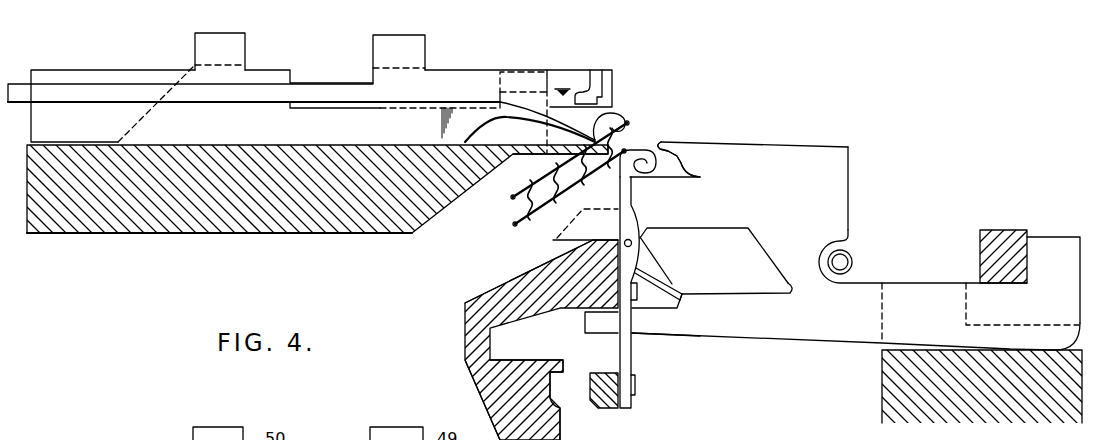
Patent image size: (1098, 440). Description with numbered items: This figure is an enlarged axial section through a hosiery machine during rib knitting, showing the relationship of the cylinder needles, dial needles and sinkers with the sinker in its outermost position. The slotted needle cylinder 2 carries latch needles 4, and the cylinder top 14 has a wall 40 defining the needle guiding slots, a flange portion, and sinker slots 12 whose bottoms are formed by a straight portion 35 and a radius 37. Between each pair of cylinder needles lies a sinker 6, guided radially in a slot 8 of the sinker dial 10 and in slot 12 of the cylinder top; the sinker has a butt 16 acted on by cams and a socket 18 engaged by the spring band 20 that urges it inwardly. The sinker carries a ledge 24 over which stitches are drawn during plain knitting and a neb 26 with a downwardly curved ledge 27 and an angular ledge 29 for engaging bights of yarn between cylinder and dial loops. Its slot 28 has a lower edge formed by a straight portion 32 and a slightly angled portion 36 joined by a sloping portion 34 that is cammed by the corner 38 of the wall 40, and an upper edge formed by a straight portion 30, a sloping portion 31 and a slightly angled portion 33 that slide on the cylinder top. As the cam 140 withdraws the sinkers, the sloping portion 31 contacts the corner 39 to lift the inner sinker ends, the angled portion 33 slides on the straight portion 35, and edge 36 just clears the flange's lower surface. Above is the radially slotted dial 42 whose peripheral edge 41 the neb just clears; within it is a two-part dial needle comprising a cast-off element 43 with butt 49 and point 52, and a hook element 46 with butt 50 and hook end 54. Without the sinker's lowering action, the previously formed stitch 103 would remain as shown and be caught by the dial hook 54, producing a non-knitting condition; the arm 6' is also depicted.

The needle cylinder 2 is at (607, 373).
The latch needles 4 is at (627, 363).
The sinker 6 is at (754, 136).
The lever arm 6' is at (865, 188).
The slots of the sinker dial 8 is at (1077, 320).
The sinker dial 10 is at (892, 400).
The slots in the cylinder top 12 is at (545, 340).
The cylinder top 14 is at (487, 390).
The butt 16 is at (1042, 247).
The socket 18 is at (840, 236).
The spring band 20 is at (857, 263).
The ledge 24 is at (662, 182).
The neb 26 is at (662, 142).
The downwardly curved ledge 27 is at (680, 150).
The slot 28 is at (783, 285).
The angular ledge 29 is at (697, 165).
The straight portion 30 is at (698, 227).
The sloping portion 31 is at (642, 233).
The straight portion 32 is at (722, 293).
The slightly angled portion 33 is at (557, 241).
The sloping portion 34 is at (683, 293).
The straight portion 35 is at (605, 245).
The slightly angled portion 36 is at (638, 313).
The radius 37 is at (532, 285).
The corner 38 is at (637, 297).
The corner 39 is at (485, 277).
The wall 40 is at (648, 278).
The peripheral edge of the dial 41 is at (545, 148).
The dial 42 is at (309, 230).
The cast-off element 43 is at (476, 78).
The hook element 46 is at (268, 126).
The butt 49 is at (418, 49).
The butt 50 is at (236, 54).
The point 52 is at (597, 103).
The hook end 54 is at (618, 112).
The previously formed stitch 103 is at (623, 125).
The cam 140 is at (1003, 237).